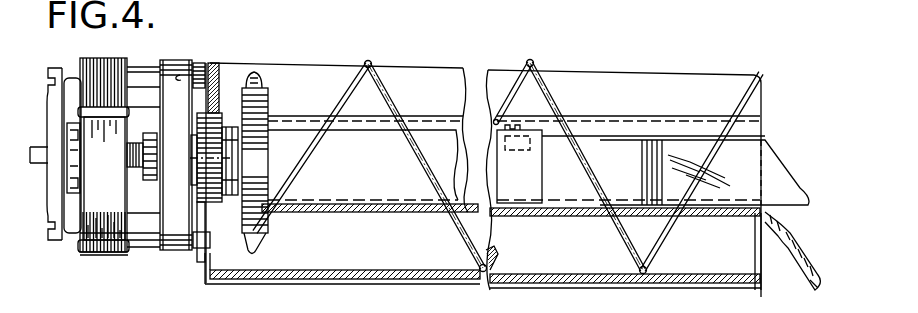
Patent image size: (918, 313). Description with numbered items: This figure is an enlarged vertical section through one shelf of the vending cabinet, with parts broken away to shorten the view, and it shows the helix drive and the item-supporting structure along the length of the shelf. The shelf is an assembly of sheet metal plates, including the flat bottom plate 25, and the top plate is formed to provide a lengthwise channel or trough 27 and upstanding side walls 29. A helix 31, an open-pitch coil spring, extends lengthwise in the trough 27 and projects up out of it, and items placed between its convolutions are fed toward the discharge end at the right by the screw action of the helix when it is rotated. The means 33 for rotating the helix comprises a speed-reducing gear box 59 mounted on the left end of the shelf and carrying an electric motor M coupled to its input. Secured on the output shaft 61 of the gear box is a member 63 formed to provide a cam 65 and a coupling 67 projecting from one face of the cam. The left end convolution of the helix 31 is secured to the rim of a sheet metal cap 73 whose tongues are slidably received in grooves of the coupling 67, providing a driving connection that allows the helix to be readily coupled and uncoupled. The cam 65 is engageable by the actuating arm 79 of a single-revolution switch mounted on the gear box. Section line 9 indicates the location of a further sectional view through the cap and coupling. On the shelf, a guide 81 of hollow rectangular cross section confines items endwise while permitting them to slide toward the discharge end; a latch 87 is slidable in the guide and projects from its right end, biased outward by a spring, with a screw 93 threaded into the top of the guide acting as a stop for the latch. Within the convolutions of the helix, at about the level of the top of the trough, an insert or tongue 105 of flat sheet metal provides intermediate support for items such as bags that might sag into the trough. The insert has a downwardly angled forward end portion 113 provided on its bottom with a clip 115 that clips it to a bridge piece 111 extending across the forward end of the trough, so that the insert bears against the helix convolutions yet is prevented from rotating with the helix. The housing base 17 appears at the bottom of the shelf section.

The electric motor M is at (83, 249).
The means for rotating each helix 33 is at (130, 258).
The speed-reducing gear box 59 is at (162, 66).
The actuating arm 79 is at (216, 72).
The member 63 is at (198, 123).
The output shaft 61 is at (194, 183).
The cam 65 is at (200, 206).
The coupling 67 is at (230, 200).
The sheet metal cap 73 is at (262, 238).
The section line 9- 9 is at (197, 160).
The upstanding side walls 29 is at (425, 68).
The guides 81 is at (437, 130).
The insert or tongue 105 is at (372, 208).
The channels or troughs 27 is at (412, 270).
The housing base 17 is at (354, 287).
The helix 31 is at (745, 82).
The screw 93 is at (525, 126).
The bottom plate 25 is at (590, 282).
The latch 87 is at (778, 165).
The downwardly angled forward end portion 113 is at (797, 250).
The clip 115 is at (783, 263).
The bridge pieces 111 is at (816, 284).